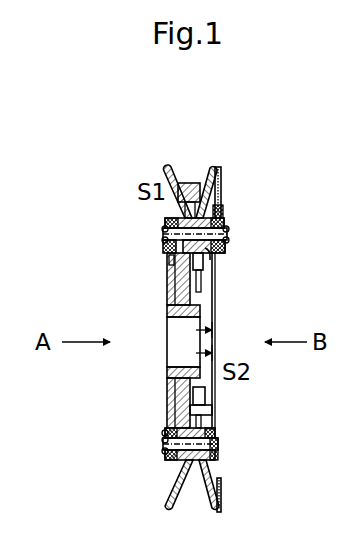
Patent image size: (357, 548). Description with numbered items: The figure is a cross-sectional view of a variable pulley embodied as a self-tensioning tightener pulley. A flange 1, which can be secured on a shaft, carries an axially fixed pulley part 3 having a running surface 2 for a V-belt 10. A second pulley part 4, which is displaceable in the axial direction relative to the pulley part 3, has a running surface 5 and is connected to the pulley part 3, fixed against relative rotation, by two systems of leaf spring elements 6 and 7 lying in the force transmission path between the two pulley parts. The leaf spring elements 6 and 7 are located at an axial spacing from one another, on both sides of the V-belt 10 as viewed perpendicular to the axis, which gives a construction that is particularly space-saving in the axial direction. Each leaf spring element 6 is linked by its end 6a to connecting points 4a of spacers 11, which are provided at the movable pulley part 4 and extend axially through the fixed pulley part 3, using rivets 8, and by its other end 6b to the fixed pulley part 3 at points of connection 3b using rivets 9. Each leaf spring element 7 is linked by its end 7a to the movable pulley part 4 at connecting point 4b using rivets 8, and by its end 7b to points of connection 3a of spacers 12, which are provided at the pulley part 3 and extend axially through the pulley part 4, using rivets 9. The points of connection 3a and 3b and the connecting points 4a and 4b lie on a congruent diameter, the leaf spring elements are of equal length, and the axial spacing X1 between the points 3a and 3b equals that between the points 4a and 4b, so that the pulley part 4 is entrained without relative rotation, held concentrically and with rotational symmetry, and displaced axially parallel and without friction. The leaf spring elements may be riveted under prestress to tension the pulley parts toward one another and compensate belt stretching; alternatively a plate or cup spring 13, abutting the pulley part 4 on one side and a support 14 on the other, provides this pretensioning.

The flange 1 is at (169, 375).
The running surface 2 is at (178, 182).
The axially fixed pulley part 3 is at (178, 288).
The point of connection 3a is at (207, 268).
The point of connection 3b is at (166, 236).
The axially displaceable pulley part 4 is at (220, 178).
The connecting point 4a is at (181, 473).
The connecting point 4b is at (213, 468).
The running surface 5 is at (206, 178).
The leaf spring element 6 is at (168, 430).
The end of leaf spring element 6a is at (168, 455).
The end of leaf spring element 6b is at (166, 262).
The leaf spring element 7 is at (213, 425).
The end of leaf spring element 7a is at (219, 430).
The end of leaf spring element 7b is at (212, 258).
The rivet 8 is at (216, 448).
The rivet 9 is at (167, 222).
The V-belt 10 is at (191, 183).
The spacer 11 is at (168, 440).
The spacer 12 is at (227, 232).
The plate or cup spring 13 is at (219, 203).
The support 14 is at (213, 250).
The axial spacing X1 is at (192, 342).